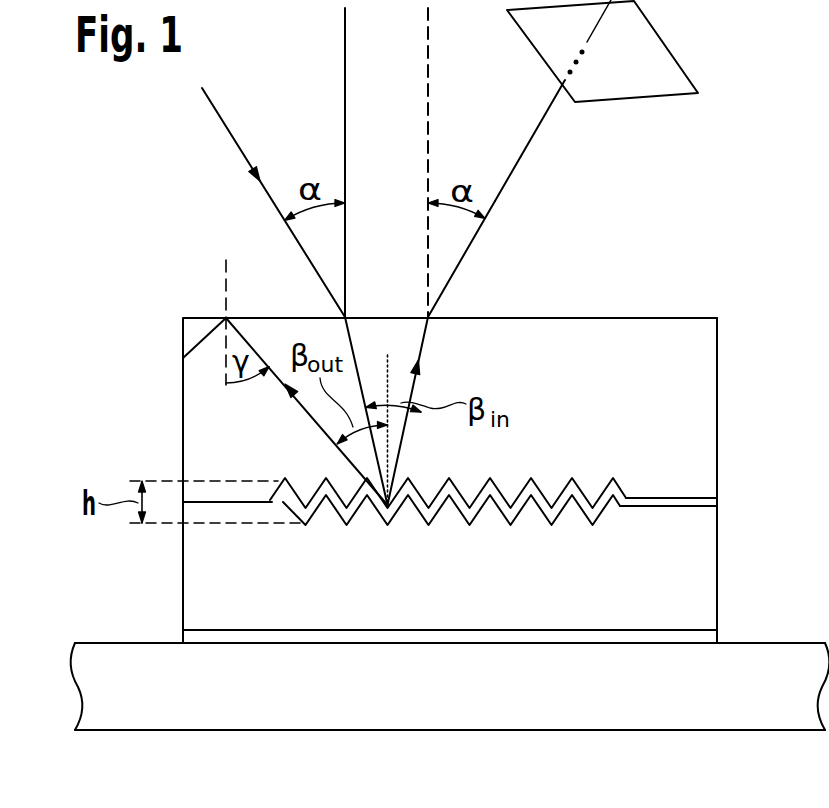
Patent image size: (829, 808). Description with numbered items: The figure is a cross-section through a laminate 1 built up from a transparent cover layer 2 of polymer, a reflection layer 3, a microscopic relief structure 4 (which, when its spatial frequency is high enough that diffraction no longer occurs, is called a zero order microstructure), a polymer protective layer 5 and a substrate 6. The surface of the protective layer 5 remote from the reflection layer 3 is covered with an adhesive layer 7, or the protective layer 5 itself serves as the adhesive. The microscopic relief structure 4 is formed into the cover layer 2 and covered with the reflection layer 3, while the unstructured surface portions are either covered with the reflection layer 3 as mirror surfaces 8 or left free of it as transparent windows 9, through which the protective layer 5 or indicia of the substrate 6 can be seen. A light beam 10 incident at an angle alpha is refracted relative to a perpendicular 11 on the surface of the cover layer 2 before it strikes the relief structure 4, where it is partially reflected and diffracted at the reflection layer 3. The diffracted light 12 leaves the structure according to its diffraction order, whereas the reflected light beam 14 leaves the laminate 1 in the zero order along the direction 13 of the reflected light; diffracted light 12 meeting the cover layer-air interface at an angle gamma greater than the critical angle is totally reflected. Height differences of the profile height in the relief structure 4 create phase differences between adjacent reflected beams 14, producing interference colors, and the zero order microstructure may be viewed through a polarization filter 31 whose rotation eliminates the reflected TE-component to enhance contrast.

The laminate 1 is at (183, 430).
The transparent cover layer 2 is at (692, 380).
The reflection layer 3 is at (692, 497).
The microscopic relief structure 4 is at (625, 540).
The protective layer 5 is at (692, 548).
The substrate 6 is at (638, 707).
The adhesive layer 7 is at (692, 633).
The mirror surfaces 8 is at (660, 522).
The transparent windows 9 is at (220, 520).
The incident light beam 10 is at (221, 119).
The perpendicular 11 is at (344, 35).
The diffracted light 12 is at (305, 408).
The direction of the reflected light 13 is at (538, 128).
The reflected light beam 14 is at (415, 380).
The polarization filter 31 is at (658, 82).